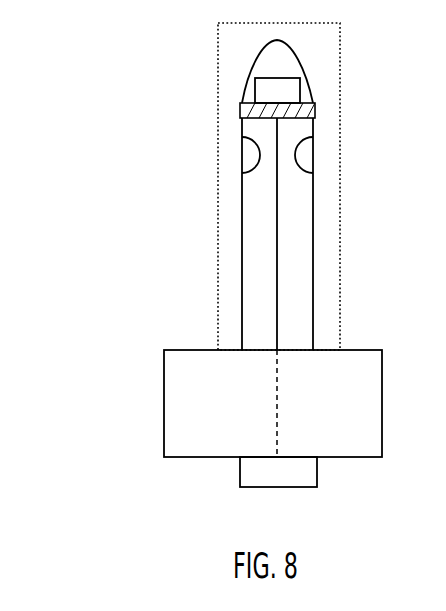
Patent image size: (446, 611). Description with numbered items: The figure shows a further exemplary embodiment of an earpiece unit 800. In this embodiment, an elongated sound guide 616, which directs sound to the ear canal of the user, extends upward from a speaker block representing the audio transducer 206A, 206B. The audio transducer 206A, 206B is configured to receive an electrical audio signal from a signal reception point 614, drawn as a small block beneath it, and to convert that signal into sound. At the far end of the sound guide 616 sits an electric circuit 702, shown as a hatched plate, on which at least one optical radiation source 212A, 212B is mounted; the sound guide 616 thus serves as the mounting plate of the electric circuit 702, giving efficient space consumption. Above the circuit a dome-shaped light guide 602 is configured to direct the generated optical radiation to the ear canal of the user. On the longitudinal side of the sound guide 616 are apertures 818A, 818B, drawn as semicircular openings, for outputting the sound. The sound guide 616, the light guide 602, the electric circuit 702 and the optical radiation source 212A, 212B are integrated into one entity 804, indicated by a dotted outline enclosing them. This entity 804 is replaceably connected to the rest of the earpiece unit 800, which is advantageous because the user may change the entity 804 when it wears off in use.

The earpiece unit 800 is at (72, 165).
The entity 804 is at (218, 45).
The light guide 602 is at (306, 84).
The electric circuit 702 is at (315, 110).
The optical radiation source 212A is at (221, 83).
The optical radiation source 212B is at (243, 92).
The sound guide 616 is at (313, 218).
The aperture 818A is at (241, 157).
The aperture 818B is at (313, 160).
The audio transducer 206A is at (273, 403).
The audio transducer 206B is at (273, 403).
The signal reception point 614 is at (240, 476).